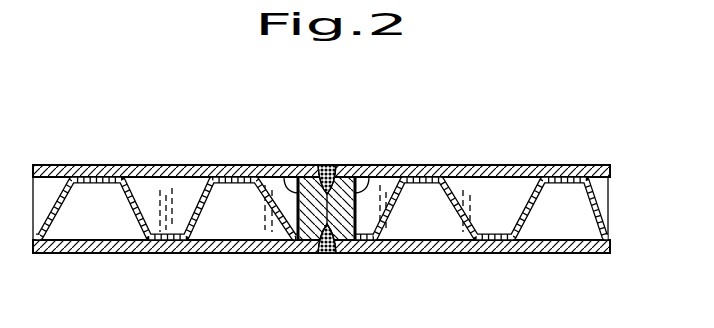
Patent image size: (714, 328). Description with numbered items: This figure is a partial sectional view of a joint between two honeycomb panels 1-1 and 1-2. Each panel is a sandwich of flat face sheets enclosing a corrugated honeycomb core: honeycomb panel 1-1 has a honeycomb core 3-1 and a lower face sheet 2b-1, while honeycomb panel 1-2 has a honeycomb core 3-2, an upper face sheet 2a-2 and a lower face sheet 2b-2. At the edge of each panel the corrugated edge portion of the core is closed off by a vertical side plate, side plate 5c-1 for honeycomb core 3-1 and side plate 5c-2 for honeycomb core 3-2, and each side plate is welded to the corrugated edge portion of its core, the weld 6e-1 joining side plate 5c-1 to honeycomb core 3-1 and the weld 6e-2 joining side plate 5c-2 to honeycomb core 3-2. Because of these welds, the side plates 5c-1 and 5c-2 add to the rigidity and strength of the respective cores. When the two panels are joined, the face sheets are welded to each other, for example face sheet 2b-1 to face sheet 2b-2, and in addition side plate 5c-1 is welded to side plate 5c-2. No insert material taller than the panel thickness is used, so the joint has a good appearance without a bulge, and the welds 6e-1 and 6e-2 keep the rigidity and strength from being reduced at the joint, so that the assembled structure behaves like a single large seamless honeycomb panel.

The honeycomb panel 1-1 is at (468, 192).
The honeycomb panel 1-2 is at (182, 197).
The face sheet 2a-2 is at (107, 164).
The face sheet 2b-1 is at (453, 252).
The face sheet 2b-2 is at (155, 255).
The honeycomb core 3-1 is at (550, 222).
The honeycomb core 3-2 is at (97, 228).
The side plate 5c-1 is at (352, 217).
The side plate 5c-2 is at (312, 217).
The weld 6e-1 is at (369, 177).
The weld 6e-2 is at (284, 177).